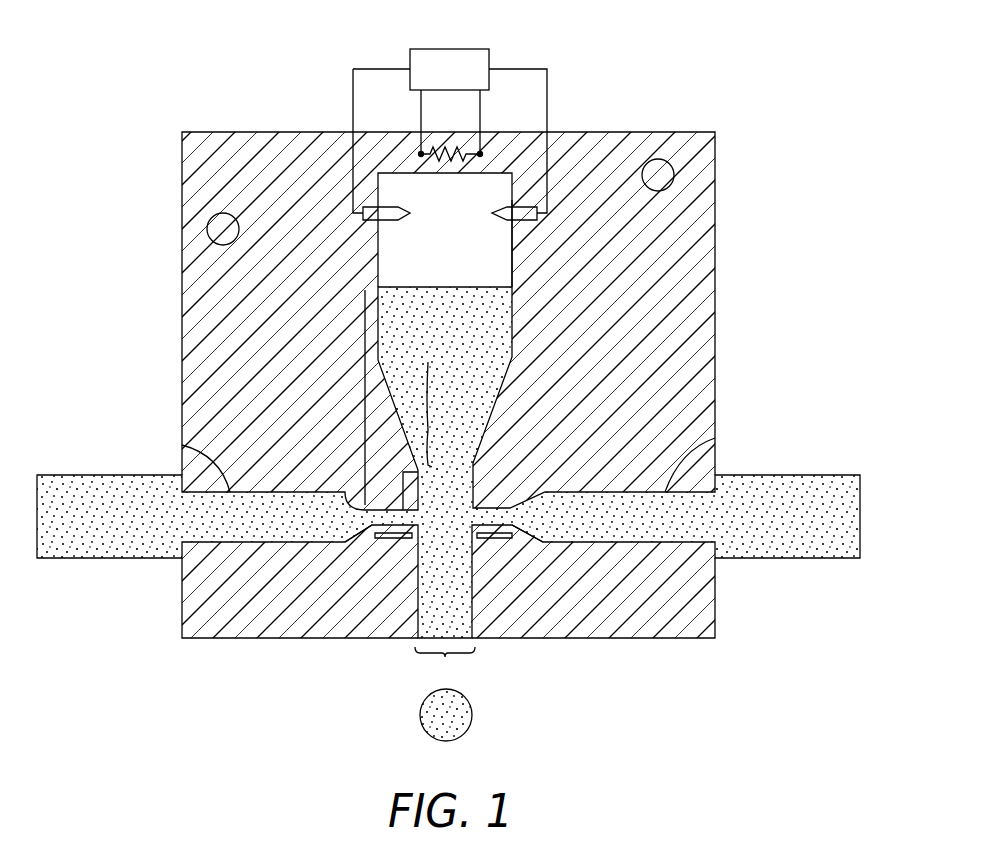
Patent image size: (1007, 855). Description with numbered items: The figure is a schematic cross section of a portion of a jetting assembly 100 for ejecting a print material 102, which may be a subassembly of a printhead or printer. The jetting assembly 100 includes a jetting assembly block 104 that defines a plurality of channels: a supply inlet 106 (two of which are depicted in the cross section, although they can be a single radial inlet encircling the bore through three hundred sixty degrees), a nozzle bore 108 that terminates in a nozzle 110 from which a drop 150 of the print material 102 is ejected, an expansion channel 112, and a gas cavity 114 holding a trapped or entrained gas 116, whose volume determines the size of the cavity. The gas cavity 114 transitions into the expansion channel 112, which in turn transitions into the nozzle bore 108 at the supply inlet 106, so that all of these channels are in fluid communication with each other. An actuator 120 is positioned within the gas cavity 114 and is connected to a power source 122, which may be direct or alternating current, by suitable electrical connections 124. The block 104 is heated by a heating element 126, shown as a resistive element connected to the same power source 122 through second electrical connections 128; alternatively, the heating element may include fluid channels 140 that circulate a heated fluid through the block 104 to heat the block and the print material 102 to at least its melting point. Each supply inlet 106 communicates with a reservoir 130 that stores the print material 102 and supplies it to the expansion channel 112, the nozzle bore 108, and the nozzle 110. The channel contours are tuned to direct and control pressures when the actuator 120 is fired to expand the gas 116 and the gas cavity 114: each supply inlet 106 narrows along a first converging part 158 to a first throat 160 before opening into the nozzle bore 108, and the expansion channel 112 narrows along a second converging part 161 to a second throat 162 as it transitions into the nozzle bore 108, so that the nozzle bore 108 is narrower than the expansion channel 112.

The jetting assembly 100 is at (268, 58).
The print material 102 is at (570, 487).
The jetting assembly block 104 is at (182, 330).
The supply inlet 106 is at (182, 445).
The nozzle bore 108 is at (460, 600).
The nozzle 110 is at (445, 665).
The expansion channel 112 is at (365, 405).
The gas cavity 114 is at (512, 257).
The gas 116 is at (378, 262).
The actuator 120 is at (500, 205).
The power source 122 is at (461, 58).
The electrical connections 124 is at (352, 92).
The heating element 126 is at (445, 146).
The second electrical connections 128 is at (419, 110).
The reservoir 130 is at (110, 530).
The fluid channels 140 is at (222, 229).
The drop 150 is at (420, 715).
The first converging part 158 is at (356, 542).
The first throat 160 is at (443, 552).
The second converging part 161 is at (428, 410).
The second throat 162 is at (395, 491).